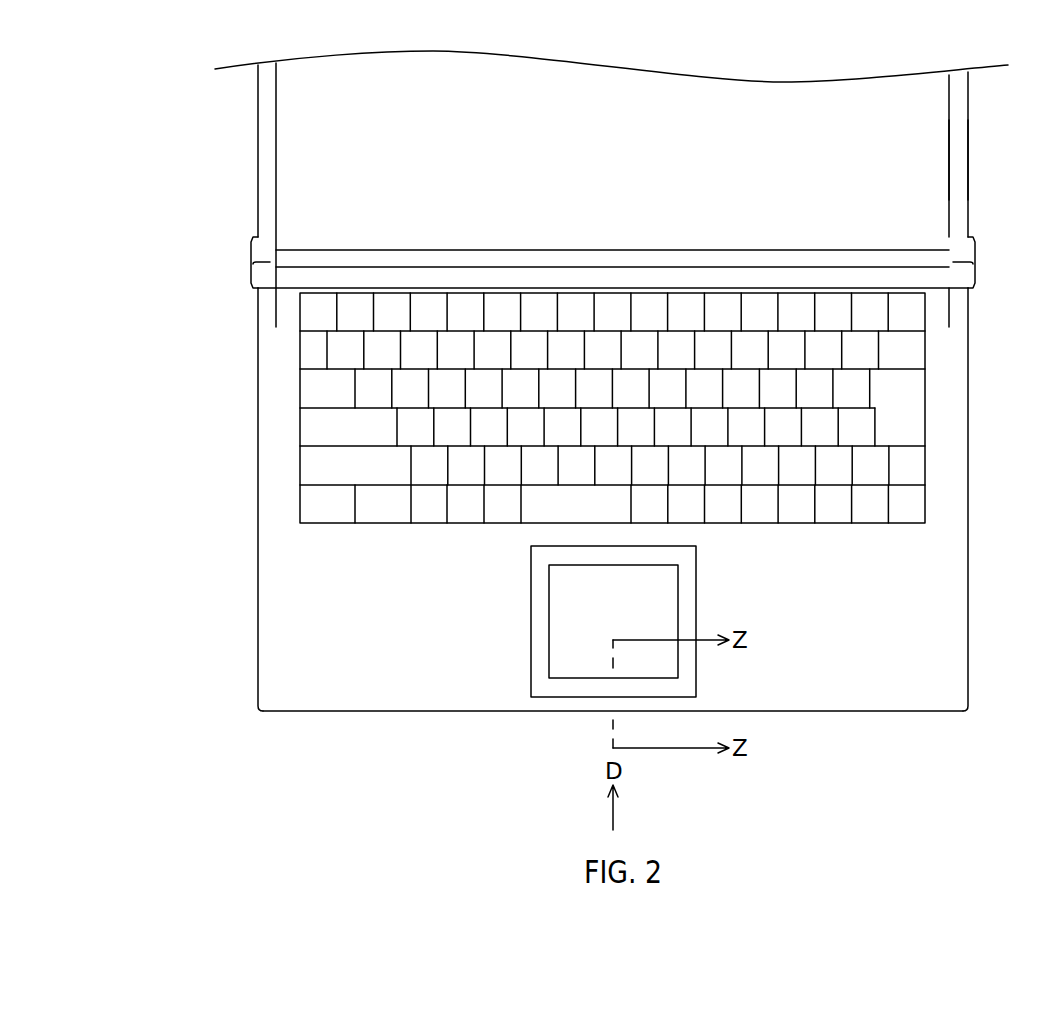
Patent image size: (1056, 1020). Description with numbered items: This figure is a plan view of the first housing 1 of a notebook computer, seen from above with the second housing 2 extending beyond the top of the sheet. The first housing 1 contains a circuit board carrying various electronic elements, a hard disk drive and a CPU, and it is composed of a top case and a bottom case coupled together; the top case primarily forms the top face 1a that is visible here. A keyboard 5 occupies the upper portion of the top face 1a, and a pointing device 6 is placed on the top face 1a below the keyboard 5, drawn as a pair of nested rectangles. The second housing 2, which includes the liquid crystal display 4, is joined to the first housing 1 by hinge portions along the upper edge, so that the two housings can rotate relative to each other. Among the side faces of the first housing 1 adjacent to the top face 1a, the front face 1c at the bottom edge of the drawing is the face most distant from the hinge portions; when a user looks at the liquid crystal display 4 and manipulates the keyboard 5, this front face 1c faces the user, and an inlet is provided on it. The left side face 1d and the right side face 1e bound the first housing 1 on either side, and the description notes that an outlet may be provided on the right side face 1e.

The first housing 1 is at (614, 535).
The top face 1a is at (942, 573).
The front face 1c is at (398, 713).
The left side face of main body 1d is at (257, 633).
The right side face 1e is at (969, 655).
The second housing 2 is at (968, 190).
The liquid crystal display 4 is at (932, 121).
The keyboard 5 is at (910, 409).
The pointing device 6 is at (590, 656).